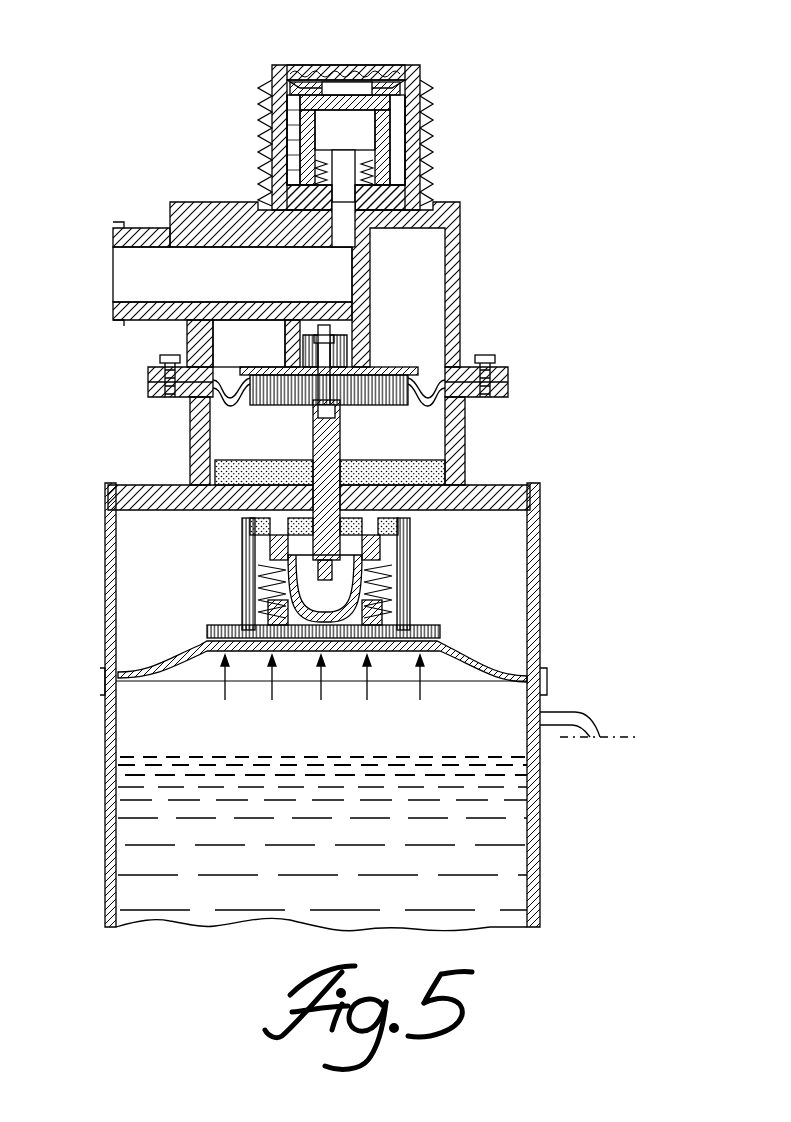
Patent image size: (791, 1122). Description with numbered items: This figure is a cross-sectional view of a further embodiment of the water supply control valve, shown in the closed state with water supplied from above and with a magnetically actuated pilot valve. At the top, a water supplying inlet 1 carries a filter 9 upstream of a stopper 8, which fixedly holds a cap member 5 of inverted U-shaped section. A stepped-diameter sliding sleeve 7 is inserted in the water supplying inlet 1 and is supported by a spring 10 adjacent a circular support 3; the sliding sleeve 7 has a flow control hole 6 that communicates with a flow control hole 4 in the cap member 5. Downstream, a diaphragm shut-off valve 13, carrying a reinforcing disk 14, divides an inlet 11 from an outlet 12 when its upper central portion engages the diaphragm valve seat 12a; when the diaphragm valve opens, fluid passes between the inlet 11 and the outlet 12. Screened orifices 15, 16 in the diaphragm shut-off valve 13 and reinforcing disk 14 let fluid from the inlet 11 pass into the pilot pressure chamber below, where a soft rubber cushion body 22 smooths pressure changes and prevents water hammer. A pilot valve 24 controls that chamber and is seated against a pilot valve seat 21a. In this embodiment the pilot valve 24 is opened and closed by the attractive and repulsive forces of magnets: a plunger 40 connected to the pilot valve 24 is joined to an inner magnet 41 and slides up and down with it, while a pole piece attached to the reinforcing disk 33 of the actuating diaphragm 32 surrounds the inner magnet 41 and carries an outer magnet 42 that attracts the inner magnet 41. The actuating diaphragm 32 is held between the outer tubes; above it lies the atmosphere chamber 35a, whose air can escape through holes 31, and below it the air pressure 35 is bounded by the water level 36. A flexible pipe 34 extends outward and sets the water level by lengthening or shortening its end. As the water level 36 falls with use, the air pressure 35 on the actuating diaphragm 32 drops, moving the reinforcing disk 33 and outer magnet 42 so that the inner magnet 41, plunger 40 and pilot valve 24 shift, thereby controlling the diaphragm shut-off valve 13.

The water supplying inlet 1 is at (433, 85).
The circular support 3 is at (395, 196).
The flow control hole 4 is at (405, 125).
The cap member 5 is at (400, 150).
The flow control hole 6 is at (295, 118).
The sliding sleeve 7 is at (305, 140).
The stopper 8 is at (368, 88).
The filter 9 is at (330, 68).
The spring 10 is at (375, 173).
The inlet 11 is at (425, 280).
The outlet 12 is at (125, 262).
The diaphragm valve seat 12a is at (370, 352).
The diaphragm shut-off valve 13 is at (430, 400).
The reinforcing disk 14 is at (400, 398).
The screened orifice 15 is at (265, 382).
The screened orifice 16 is at (270, 398).
The valve stem 21a is at (345, 338).
The cushion body 22 is at (420, 472).
The pilot valve 24 is at (320, 415).
The holes 31 is at (535, 536).
The actuating diaphragm 32 is at (470, 662).
The reinforcing disk 33 is at (440, 628).
The flexible pipe 34 is at (594, 728).
The air pressure 35 is at (140, 717).
The atmosphere chamber 35a is at (145, 578).
The water level 36 is at (442, 757).
The plunger 40 is at (334, 448).
The inner magnet 41 is at (370, 558).
The outer magnet 42 is at (405, 525).